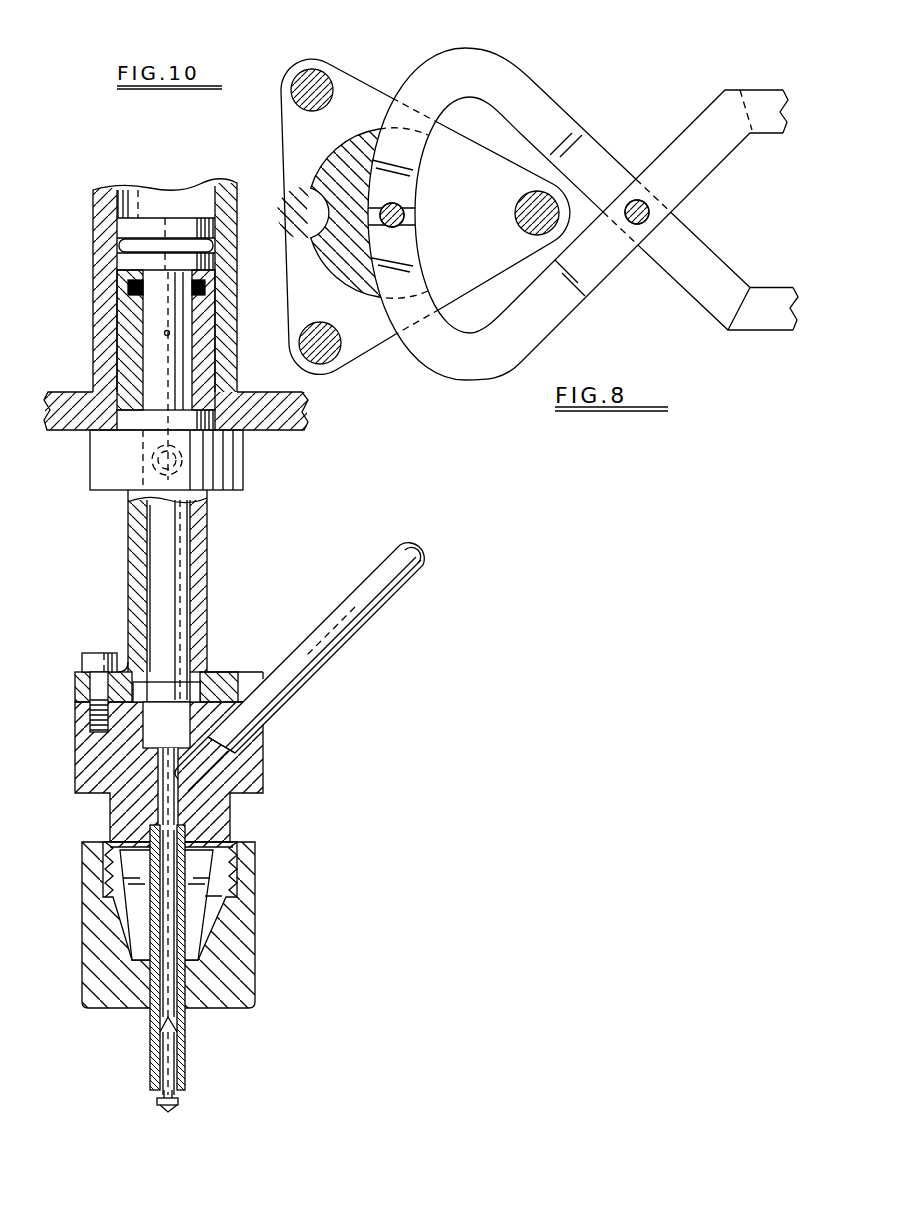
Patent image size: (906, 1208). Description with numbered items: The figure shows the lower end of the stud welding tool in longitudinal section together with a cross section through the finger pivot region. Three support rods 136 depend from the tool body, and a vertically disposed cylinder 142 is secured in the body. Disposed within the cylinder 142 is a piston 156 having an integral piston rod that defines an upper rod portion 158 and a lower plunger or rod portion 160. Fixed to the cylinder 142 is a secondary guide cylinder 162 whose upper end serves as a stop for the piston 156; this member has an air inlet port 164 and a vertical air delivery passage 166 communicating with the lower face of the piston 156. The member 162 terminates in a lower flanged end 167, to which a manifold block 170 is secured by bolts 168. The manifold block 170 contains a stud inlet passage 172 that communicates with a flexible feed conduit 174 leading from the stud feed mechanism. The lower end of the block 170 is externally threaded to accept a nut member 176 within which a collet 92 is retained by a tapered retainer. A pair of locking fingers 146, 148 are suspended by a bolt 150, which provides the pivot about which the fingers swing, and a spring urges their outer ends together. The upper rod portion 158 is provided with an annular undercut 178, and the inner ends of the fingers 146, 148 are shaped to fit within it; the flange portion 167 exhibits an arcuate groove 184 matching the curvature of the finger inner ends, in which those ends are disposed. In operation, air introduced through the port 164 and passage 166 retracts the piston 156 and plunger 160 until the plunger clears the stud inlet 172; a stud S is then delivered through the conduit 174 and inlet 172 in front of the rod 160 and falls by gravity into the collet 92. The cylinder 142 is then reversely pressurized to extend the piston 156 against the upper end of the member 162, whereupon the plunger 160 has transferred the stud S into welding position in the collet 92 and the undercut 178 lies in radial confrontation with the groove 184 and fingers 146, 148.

In FIG. 8, the support rods 136 is at (325, 83).
In FIG. 10, the arcuate groove 184 is at (128, 668).
In FIG. 8, the arcuate groove 184 is at (373, 150).
In FIG. 8, the locking finger 146 is at (717, 105).
In FIG. 8, the locking finger 148 is at (718, 295).
In FIG. 8, the bolt 150 is at (635, 195).
In FIG. 10, the annular undercut 178 is at (180, 690).
In FIG. 8, the annular undercut 178 is at (386, 224).
In FIG. 10, the piston 156 is at (128, 231).
In FIG. 10, the cylinder 142 is at (100, 296).
In FIG. 10, the secondary guide cylinder 162 is at (120, 347).
In FIG. 10, the vertical air delivery passage 166 is at (195, 338).
In FIG. 10, the air inlet port 164 is at (190, 462).
In FIG. 10, the upper rod portion 158 is at (155, 562).
In FIG. 10, the bolts 168 is at (92, 656).
In FIG. 10, the lower flanged end 167 is at (208, 675).
In FIG. 10, the flexible feed conduit 174 is at (330, 665).
In FIG. 10, the stud inlet passage 172 is at (204, 764).
In FIG. 10, the manifold block 170 is at (90, 765).
In FIG. 10, the plunger or rod portion 160 is at (160, 810).
In FIG. 10, the nut member 176 is at (245, 950).
In FIG. 10, the collet 92 is at (185, 1062).
In FIG. 10, the stud S is at (178, 1097).